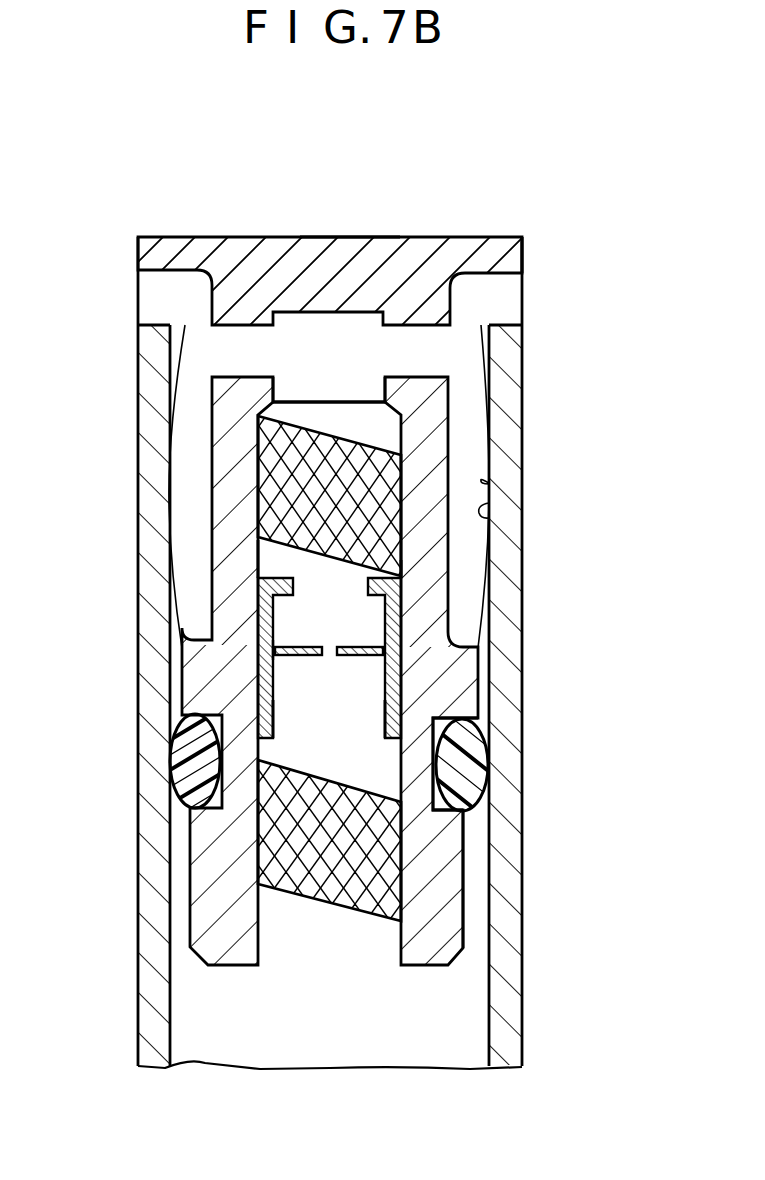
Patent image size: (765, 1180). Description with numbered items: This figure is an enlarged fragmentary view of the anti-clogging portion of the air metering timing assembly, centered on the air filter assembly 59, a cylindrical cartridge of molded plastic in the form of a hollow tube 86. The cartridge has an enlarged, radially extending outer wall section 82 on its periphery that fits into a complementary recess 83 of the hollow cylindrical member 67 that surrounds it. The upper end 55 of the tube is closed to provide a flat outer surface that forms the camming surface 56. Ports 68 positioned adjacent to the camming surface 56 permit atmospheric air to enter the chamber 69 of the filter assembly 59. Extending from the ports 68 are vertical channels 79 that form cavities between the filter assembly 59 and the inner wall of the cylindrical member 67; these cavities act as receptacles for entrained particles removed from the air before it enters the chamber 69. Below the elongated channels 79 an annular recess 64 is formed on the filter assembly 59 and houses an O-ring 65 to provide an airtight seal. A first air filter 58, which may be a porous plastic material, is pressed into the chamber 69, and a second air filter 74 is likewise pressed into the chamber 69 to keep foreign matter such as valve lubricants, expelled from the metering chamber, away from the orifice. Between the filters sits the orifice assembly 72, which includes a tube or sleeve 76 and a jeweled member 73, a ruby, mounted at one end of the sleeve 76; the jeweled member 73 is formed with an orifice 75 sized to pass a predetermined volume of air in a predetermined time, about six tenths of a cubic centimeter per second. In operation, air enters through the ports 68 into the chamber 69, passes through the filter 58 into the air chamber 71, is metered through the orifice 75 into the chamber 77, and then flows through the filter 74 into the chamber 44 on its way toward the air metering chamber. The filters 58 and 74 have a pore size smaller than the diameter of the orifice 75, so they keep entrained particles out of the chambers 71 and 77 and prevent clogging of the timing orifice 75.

The chamber 44 is at (364, 1018).
The upper end 55 is at (495, 258).
The camming surface 56 is at (445, 242).
The first air filter 58 is at (388, 468).
The air filter assembly 59 is at (338, 228).
The annular recess 64 is at (458, 715).
The O-ring 65 is at (475, 773).
The hollow cylindrical member 67 is at (513, 400).
The ports 68 is at (503, 298).
The chamber 69 is at (345, 368).
The air chamber 71 is at (338, 592).
The orifice assembly 72 is at (262, 648).
The jeweled member 73 is at (372, 630).
The second air filter 74 is at (277, 853).
The orifice 75 is at (328, 657).
The sleeve 76 is at (275, 622).
The chamber 77 is at (348, 748).
The vertical channels 79 is at (465, 545).
The outer wall section 82 is at (483, 483).
The recess 83 is at (490, 514).
The hollow tube 86 is at (447, 918).